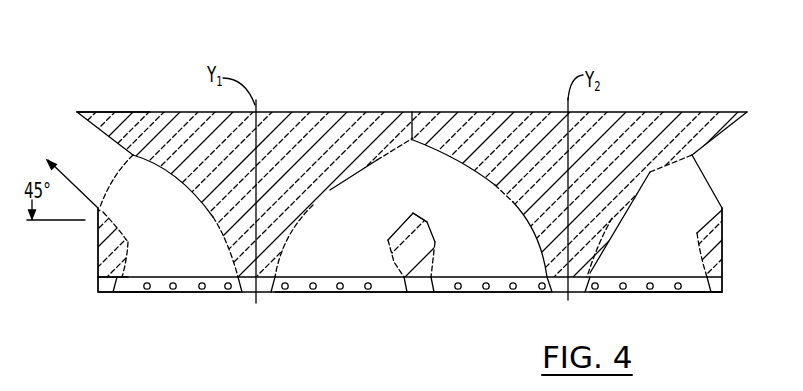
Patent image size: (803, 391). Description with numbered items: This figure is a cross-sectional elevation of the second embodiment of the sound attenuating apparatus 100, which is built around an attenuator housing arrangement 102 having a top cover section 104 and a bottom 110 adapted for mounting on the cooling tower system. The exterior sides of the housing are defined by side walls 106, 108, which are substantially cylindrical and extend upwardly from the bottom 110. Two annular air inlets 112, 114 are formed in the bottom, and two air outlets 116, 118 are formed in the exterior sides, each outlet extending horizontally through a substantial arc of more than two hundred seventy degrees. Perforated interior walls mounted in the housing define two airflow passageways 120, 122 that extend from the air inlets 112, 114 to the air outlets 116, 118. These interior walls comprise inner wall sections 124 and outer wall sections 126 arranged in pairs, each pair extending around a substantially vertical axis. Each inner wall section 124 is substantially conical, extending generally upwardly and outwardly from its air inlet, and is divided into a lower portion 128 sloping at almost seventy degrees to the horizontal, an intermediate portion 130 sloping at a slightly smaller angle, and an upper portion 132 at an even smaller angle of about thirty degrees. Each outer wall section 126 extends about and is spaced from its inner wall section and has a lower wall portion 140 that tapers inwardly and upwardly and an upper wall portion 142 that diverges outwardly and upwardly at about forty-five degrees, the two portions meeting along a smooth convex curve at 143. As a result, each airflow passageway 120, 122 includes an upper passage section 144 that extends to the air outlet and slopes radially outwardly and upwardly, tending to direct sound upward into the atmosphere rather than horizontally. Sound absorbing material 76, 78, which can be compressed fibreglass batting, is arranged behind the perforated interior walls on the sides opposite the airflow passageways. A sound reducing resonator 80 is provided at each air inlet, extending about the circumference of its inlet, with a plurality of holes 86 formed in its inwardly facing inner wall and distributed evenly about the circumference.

The sound attenuating apparatus 100 is at (500, 80).
The attenuator housing arrangement 102 is at (663, 110).
The top cover section 104 is at (322, 111).
The side wall 106 is at (98, 255).
The side wall 108 is at (725, 265).
The bottom 110 is at (698, 293).
The annular air inlet 112 is at (190, 293).
The annular air inlet 114 is at (528, 293).
The air outlet 116 is at (97, 163).
The air outlet 118 is at (713, 165).
The airflow passageway 120 is at (206, 250).
The airflow passageway 122 is at (667, 240).
The inner wall section 124 is at (322, 197).
The outer wall section 126 is at (388, 253).
The lower portion 128 is at (290, 245).
The intermediate portion 130 is at (200, 205).
The upper portion 132 is at (377, 160).
The lower wall portion 140 is at (123, 262).
The upper wall portion 142 is at (110, 223).
The smooth convex curve 143 is at (123, 242).
The upper passage section 144 is at (703, 200).
The sound absorbing material 76 is at (113, 112).
The sound absorbing material 78 is at (437, 240).
The sound reducing resonator 80 is at (300, 293).
The holes 86 is at (340, 290).